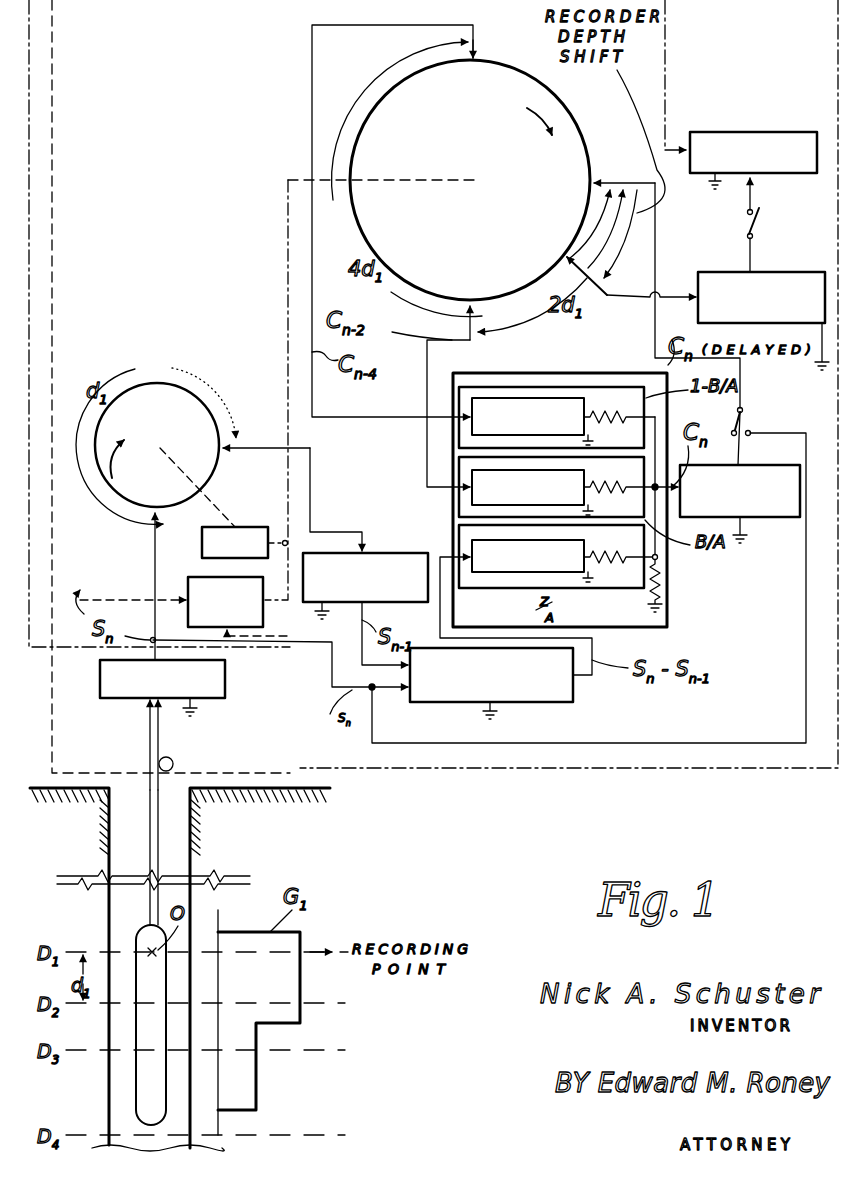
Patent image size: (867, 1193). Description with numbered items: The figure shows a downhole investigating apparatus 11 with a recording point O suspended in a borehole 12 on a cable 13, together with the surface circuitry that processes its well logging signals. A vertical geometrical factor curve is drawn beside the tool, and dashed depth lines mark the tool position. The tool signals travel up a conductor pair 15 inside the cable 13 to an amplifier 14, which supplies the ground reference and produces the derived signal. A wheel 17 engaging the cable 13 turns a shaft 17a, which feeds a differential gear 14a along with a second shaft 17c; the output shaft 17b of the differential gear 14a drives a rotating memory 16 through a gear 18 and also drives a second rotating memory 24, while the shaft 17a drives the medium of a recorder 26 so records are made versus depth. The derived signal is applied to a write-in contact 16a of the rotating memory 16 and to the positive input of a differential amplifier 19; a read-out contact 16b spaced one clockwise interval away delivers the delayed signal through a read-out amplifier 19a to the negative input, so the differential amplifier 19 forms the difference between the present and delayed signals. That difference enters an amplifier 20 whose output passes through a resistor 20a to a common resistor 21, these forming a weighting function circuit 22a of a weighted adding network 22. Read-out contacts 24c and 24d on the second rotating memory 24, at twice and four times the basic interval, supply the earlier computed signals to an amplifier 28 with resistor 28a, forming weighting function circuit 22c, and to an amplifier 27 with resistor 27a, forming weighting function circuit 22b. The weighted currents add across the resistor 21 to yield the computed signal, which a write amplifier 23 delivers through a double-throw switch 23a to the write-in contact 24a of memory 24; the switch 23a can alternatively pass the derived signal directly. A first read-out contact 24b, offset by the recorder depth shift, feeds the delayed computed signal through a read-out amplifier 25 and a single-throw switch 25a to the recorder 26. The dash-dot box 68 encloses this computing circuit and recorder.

The downhole investigating apparatus 11 is at (136, 1027).
The borehole 12 is at (112, 846).
The cable 13 is at (153, 836).
The amplifier 14 is at (225, 702).
The differential gear 14a is at (188, 585).
The conductor pair 15 is at (148, 740).
The rotating memory 16 is at (151, 430).
The write-in contact 16a is at (157, 507).
The read-out contact 16b is at (218, 449).
The wheel 17 is at (176, 762).
The shaft 17a is at (55, 172).
The output shaft 17b is at (288, 220).
The shaft 17c is at (117, 598).
The gear 18 is at (250, 527).
The differential amplifier 19 is at (572, 705).
The read-out amplifier 19a is at (406, 553).
The amplifier 20 is at (505, 574).
The resistor 20a is at (618, 574).
The resistor 21 is at (662, 594).
The weighted adding network 22 is at (660, 628).
The weighting function circuit 22a is at (660, 578).
The weighting function circuit 22b is at (459, 478).
The weighting function circuit 22c is at (459, 418).
The write amplifier 23 is at (757, 519).
The double-throw switch 23a is at (750, 428).
The second rotating memory 24 is at (478, 157).
The write-in contact 24a is at (586, 183).
The first read-out contact 24b is at (575, 266).
The read-out contact 24c is at (470, 298).
The read-out contact 24d is at (483, 58).
The read-out amplifier 25 is at (712, 272).
The single-throw switch 25a is at (762, 224).
The recorder 26 is at (750, 132).
The amplifier 27 is at (459, 497).
The resistor 27a is at (615, 492).
The amplifier 28 is at (522, 398).
The resistor 28a is at (612, 411).
The computing circuit and recorder 68 is at (570, 770).